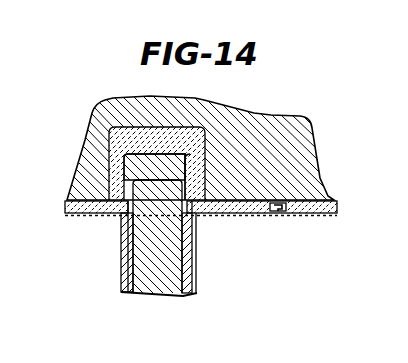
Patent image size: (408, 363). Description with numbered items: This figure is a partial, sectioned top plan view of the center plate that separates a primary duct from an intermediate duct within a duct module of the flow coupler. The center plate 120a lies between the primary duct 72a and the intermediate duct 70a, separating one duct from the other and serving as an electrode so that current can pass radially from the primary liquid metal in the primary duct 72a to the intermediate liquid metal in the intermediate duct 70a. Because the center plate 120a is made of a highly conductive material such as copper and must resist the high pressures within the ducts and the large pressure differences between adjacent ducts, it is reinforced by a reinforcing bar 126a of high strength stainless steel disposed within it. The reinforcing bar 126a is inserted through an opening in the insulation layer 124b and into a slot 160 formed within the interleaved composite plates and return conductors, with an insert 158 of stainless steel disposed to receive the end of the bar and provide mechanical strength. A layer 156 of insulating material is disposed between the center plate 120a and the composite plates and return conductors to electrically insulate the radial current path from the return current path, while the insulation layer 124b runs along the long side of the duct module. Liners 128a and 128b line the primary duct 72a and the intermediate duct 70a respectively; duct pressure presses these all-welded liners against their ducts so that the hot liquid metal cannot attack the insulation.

The layer of insulating material 156 is at (183, 128).
The insert 158 is at (125, 158).
The slot 160 is at (205, 153).
The insulation layer 124b is at (322, 197).
The liner 128a is at (120, 248).
The liner 128b is at (196, 268).
The primary duct 72a is at (96, 295).
The reinforcing bar 126a is at (153, 286).
The center plate 120a is at (192, 294).
The intermediate duct 70a is at (250, 290).